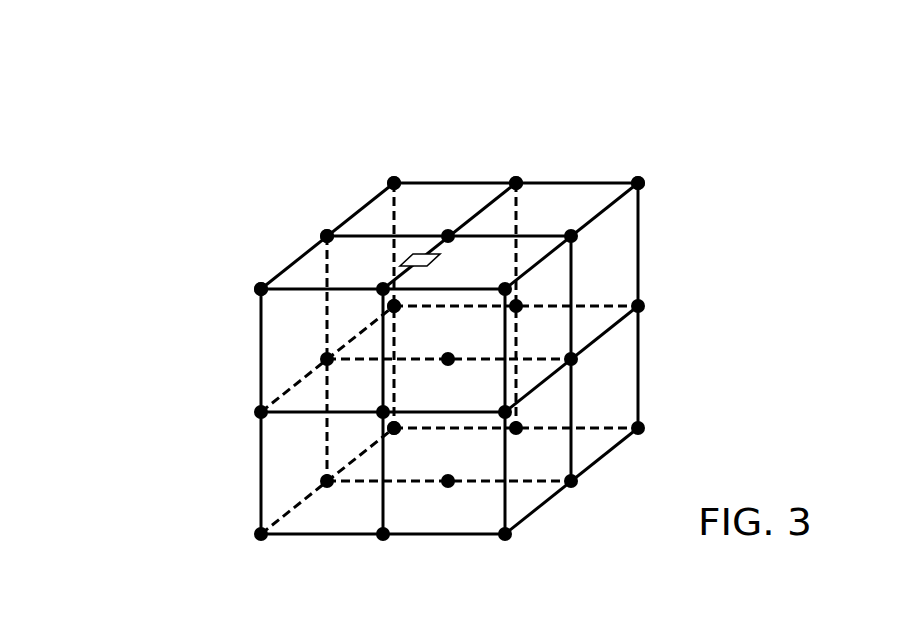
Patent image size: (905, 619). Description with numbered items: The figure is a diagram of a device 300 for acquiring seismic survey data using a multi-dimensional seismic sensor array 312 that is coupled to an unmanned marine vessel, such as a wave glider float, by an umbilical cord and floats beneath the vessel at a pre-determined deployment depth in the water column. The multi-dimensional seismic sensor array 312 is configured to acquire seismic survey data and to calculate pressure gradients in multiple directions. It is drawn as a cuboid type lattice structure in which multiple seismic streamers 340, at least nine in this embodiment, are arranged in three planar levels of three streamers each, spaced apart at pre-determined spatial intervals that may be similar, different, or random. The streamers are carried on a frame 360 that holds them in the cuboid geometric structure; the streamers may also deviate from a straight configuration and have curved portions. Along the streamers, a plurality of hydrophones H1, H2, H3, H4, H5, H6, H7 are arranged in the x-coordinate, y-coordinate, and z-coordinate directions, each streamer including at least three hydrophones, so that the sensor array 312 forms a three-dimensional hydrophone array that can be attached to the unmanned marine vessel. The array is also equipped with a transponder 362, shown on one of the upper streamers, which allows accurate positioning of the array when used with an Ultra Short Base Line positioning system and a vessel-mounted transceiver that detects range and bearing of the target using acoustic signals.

The device 300 is at (178, 52).
The multi-dimensional seismic sensor array 312 is at (146, 136).
The seismic streamers 340 is at (525, 236).
The frame 360 is at (638, 239).
The transponder 362 is at (412, 258).
The hydrophone H1 is at (390, 167).
The hydrophone H2 is at (513, 167).
The hydrophone H3 is at (631, 167).
The hydrophone H4 is at (322, 220).
The hydrophone H5 is at (254, 273).
The hydrophone H6 is at (388, 300).
The hydrophone H7 is at (390, 434).